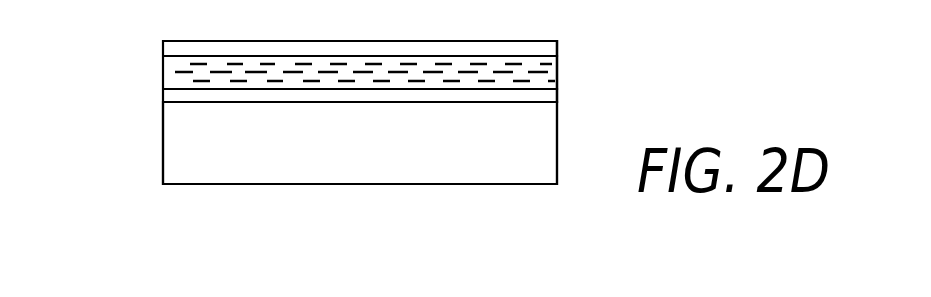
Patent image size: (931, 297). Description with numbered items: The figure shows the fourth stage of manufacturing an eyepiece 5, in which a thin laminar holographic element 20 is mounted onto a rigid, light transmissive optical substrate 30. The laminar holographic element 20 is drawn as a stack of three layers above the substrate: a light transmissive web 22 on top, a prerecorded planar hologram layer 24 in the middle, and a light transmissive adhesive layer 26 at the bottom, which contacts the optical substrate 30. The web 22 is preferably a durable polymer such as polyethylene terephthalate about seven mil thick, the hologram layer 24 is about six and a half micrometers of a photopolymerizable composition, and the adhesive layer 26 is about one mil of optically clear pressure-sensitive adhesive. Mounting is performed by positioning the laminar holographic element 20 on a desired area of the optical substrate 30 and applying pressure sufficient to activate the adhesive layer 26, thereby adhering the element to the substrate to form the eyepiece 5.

The eyepiece 5 is at (103, 208).
The laminar holographic element 20 is at (152, 35).
The light transmissive web 22 is at (557, 42).
The planar hologram layer 24 is at (557, 70).
The light transmissive adhesive layer 26 is at (557, 93).
The optical substrate 30 is at (152, 110).